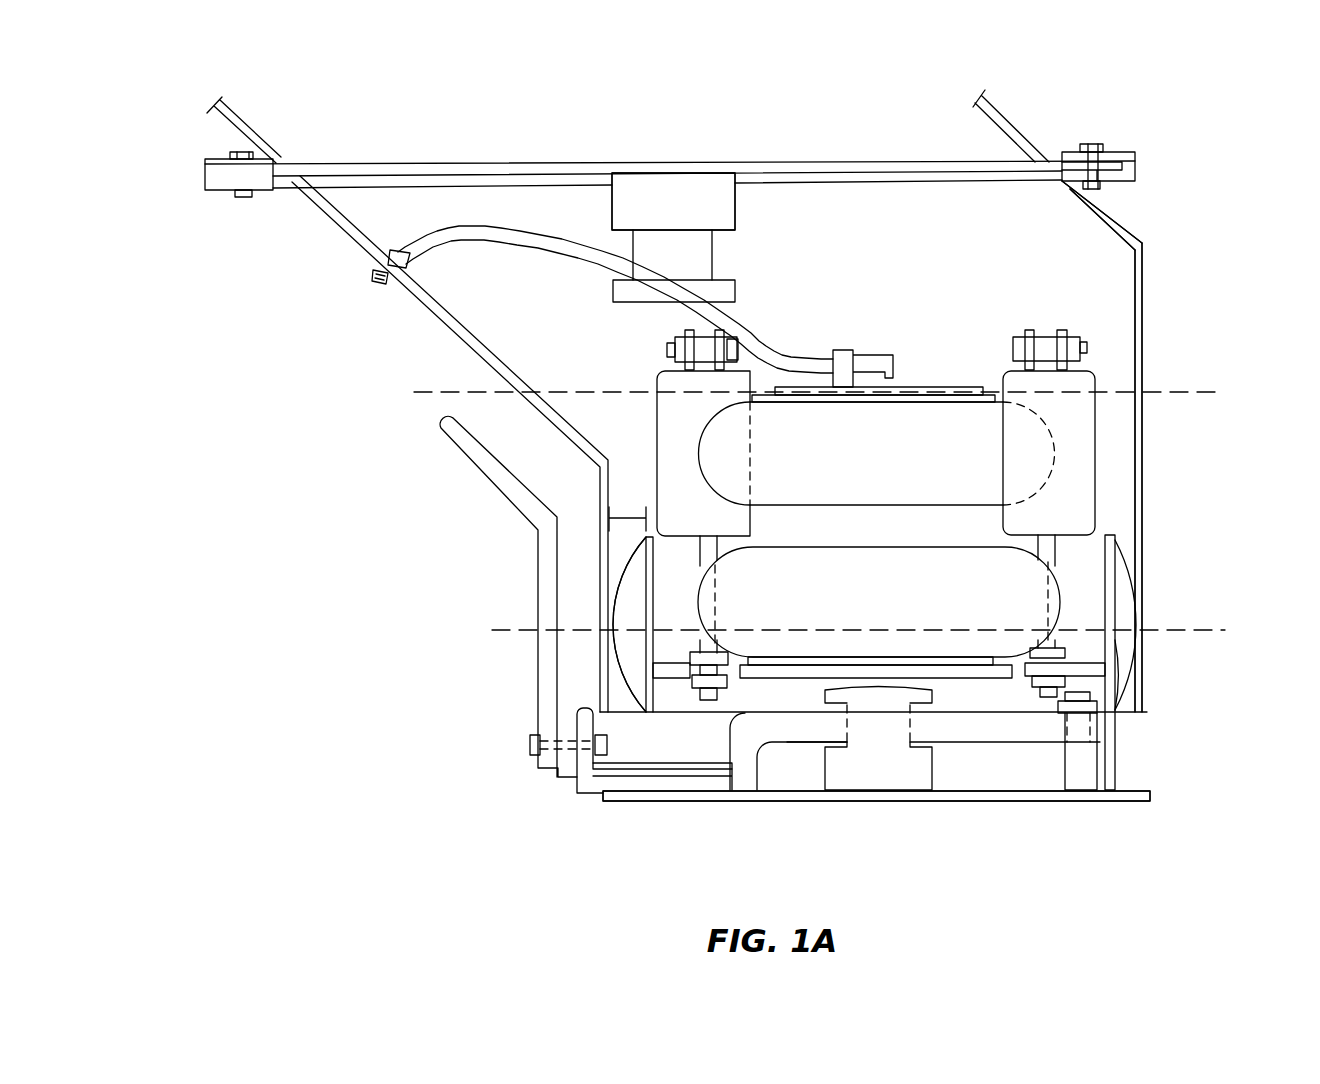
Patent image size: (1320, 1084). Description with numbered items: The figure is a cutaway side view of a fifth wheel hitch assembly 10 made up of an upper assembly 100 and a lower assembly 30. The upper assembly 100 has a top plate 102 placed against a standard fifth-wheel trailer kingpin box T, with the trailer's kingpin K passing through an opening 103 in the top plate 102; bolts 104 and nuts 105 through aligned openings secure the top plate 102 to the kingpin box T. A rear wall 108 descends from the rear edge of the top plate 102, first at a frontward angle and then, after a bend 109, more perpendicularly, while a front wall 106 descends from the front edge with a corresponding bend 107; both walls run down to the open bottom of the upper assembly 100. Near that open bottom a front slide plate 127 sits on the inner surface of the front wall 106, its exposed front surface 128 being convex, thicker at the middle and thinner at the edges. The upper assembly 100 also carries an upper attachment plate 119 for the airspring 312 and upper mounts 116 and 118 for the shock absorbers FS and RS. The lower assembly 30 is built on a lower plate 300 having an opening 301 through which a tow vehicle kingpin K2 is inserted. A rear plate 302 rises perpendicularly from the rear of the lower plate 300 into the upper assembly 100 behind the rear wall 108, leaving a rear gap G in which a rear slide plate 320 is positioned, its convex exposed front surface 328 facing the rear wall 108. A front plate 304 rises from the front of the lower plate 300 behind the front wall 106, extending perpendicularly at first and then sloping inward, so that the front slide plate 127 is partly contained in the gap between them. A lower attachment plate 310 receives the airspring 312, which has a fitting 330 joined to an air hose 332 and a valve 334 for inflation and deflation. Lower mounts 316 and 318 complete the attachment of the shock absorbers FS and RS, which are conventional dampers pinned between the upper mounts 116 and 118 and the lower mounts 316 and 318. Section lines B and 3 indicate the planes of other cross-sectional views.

The fifth wheel hitch assembly 10 is at (258, 462).
The lower assembly 30 is at (1150, 769).
The upper assembly 100 is at (1172, 283).
The top plate 102 is at (1140, 170).
The opening 103 is at (602, 193).
The bolts 104 is at (233, 157).
The nuts 105 is at (243, 197).
The front wall 106 is at (1145, 488).
The bend 107 is at (1145, 244).
The rear wall 108 is at (413, 293).
The bend 109 is at (598, 468).
The upper mount 116 is at (690, 335).
The upper mount 118 is at (1062, 328).
The upper attachment plate 119 is at (950, 385).
The front slide plate 127 is at (1125, 602).
The exposed front surface 128 is at (1125, 692).
The lower plate 300 is at (1080, 801).
The opening 301 is at (943, 780).
The rear plate 302 is at (650, 790).
The front plate 304 is at (1108, 543).
The lower attachment plate 310 is at (793, 672).
The airspring 312 is at (902, 430).
The lower mount 316 is at (680, 672).
The lower mount 318 is at (1085, 667).
The rear slide plate 320 is at (632, 593).
The exposed front surface 328 is at (617, 660).
The fitting 330 is at (870, 352).
The air hose 332 is at (787, 345).
The valve 334 is at (388, 268).
The section line B- B is at (819, 391).
The section line 3- 3 is at (855, 629).
The rear gap G is at (627, 511).
The kingpin K is at (713, 210).
The kingpin K2 is at (878, 770).
The fifth-wheel trailer kingpin box T is at (972, 136).
The shock absorber FS is at (672, 438).
The shock absorber RS is at (1080, 423).